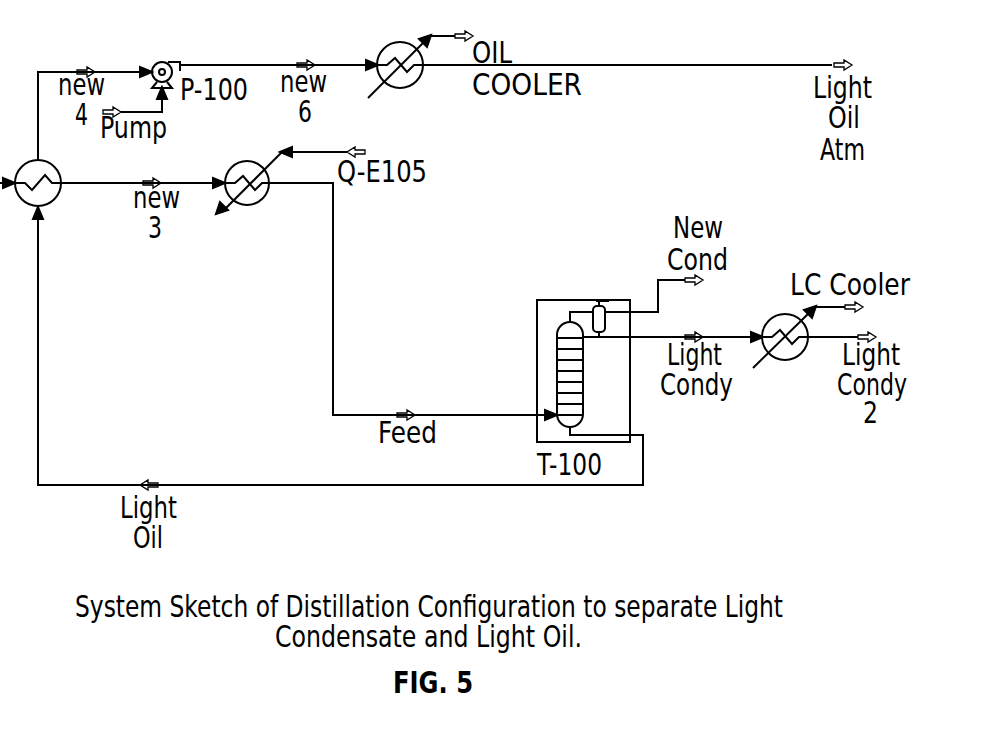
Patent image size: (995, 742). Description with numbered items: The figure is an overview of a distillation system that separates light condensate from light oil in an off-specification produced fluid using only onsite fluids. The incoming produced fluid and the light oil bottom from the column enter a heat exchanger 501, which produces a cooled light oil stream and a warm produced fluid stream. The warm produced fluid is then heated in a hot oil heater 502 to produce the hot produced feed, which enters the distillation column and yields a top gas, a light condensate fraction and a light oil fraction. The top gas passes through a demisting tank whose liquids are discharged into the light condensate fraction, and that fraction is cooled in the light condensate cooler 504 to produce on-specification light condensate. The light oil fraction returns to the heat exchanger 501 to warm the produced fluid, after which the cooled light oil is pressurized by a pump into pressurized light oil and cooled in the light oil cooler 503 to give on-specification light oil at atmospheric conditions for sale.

The heat exchanger 501 is at (50, 206).
The hot oil heater 502 is at (240, 205).
The light oil cooler 503 is at (400, 88).
The light condensate (LC) cooler heat exchanger 504 is at (785, 360).